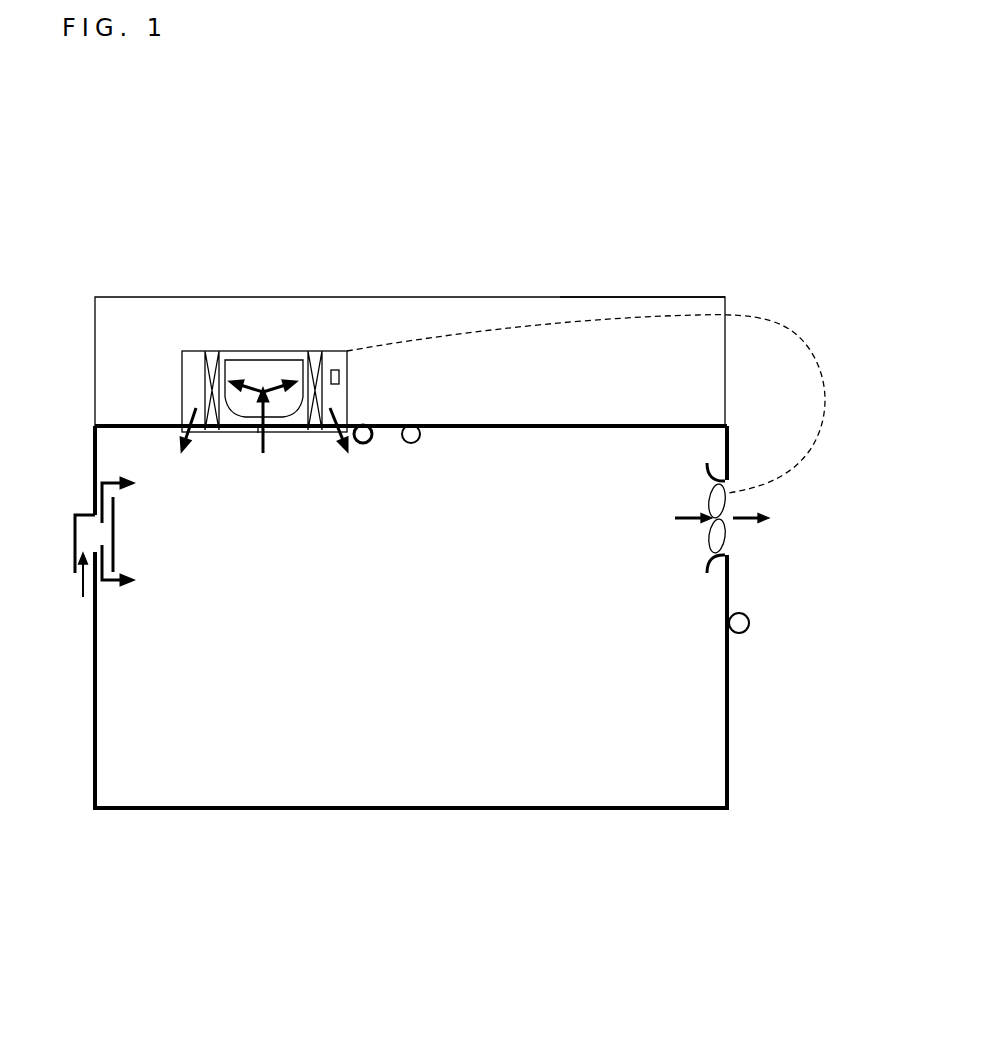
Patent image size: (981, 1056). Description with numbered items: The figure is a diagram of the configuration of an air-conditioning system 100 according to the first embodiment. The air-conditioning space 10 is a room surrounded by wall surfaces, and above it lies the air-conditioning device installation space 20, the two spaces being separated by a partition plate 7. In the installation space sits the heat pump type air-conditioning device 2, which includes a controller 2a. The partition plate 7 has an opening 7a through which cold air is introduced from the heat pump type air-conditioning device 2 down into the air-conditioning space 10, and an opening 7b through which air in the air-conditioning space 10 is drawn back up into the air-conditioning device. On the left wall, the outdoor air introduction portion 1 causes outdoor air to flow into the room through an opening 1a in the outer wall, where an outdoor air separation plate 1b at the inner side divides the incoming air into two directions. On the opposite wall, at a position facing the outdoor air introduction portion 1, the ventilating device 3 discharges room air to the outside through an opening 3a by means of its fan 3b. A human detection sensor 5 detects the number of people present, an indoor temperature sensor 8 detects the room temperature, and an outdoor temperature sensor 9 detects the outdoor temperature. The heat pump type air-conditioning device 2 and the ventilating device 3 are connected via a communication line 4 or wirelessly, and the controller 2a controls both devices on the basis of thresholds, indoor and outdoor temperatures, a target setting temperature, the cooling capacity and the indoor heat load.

The air-conditioning system 100 is at (695, 277).
The air-conditioning space 10 is at (188, 800).
The air-conditioning device installation space 20 is at (190, 318).
The outdoor air introduction portion 1 is at (125, 597).
The opening 1a is at (78, 574).
The outdoor air separation plate 1b is at (123, 545).
The heat pump type air-conditioning device 2 is at (267, 352).
The controller 2a is at (340, 373).
The ventilating device 3 is at (692, 525).
The opening 3a is at (743, 545).
The fan 3b is at (710, 482).
The communication line 4 is at (608, 313).
The human detection sensor 5 is at (363, 445).
The partition plate 7 is at (623, 425).
The opening 7a is at (183, 422).
The opening 7b is at (258, 427).
The indoor temperature sensor 8 is at (410, 445).
The outdoor temperature sensor 9 is at (740, 640).